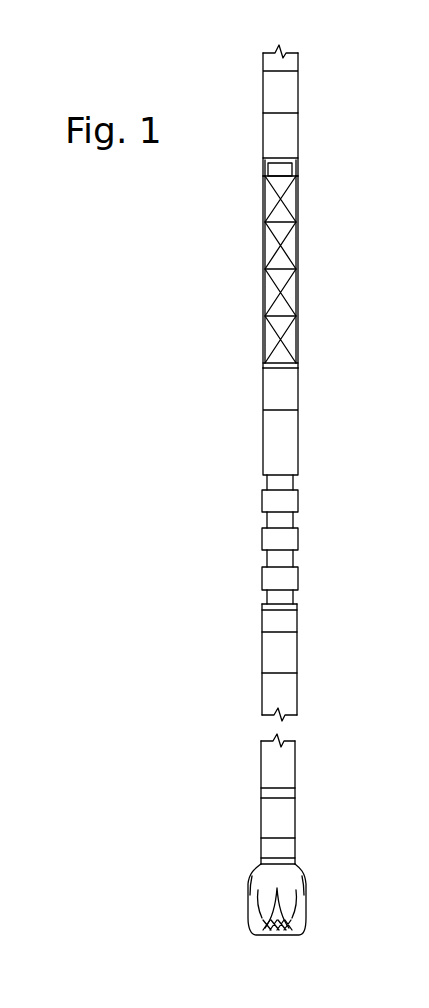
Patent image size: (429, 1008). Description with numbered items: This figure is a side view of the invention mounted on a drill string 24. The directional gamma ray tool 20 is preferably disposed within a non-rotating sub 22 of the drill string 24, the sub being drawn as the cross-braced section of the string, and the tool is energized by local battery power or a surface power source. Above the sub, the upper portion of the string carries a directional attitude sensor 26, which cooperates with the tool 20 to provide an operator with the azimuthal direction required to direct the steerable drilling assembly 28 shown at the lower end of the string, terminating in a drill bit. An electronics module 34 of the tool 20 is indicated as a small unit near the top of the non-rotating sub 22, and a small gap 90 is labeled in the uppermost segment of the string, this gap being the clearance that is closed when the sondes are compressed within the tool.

The directional gamma ray tool 20 is at (257, 280).
The non-rotating sub 22 is at (298, 333).
The drill string 24 is at (317, 463).
The directional attitude sensor 26 is at (288, 134).
The steerable drilling assembly 28 is at (250, 813).
The electronics module 34 is at (262, 170).
The small gap 90 is at (273, 93).